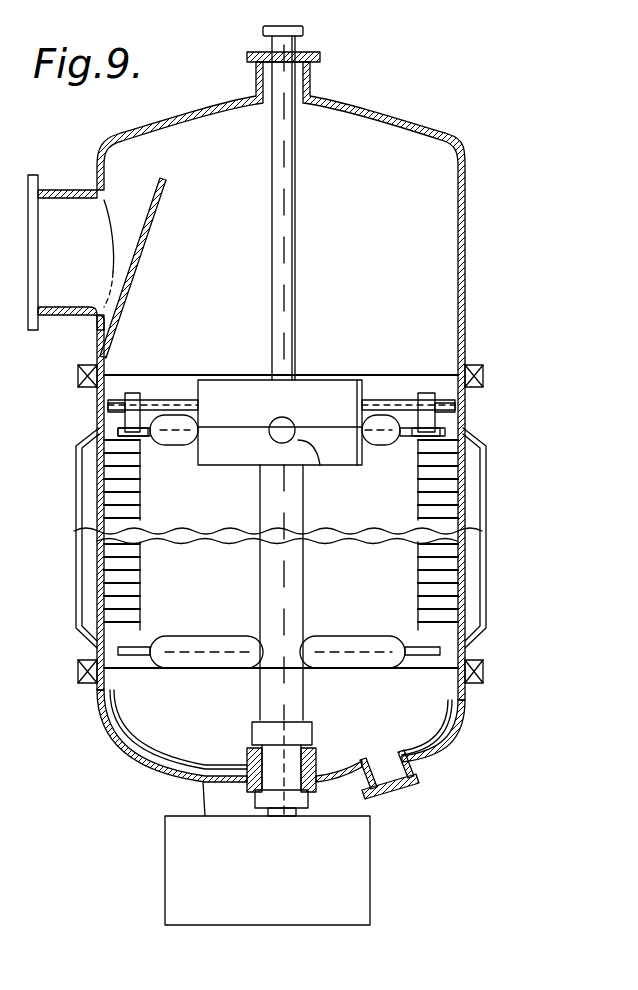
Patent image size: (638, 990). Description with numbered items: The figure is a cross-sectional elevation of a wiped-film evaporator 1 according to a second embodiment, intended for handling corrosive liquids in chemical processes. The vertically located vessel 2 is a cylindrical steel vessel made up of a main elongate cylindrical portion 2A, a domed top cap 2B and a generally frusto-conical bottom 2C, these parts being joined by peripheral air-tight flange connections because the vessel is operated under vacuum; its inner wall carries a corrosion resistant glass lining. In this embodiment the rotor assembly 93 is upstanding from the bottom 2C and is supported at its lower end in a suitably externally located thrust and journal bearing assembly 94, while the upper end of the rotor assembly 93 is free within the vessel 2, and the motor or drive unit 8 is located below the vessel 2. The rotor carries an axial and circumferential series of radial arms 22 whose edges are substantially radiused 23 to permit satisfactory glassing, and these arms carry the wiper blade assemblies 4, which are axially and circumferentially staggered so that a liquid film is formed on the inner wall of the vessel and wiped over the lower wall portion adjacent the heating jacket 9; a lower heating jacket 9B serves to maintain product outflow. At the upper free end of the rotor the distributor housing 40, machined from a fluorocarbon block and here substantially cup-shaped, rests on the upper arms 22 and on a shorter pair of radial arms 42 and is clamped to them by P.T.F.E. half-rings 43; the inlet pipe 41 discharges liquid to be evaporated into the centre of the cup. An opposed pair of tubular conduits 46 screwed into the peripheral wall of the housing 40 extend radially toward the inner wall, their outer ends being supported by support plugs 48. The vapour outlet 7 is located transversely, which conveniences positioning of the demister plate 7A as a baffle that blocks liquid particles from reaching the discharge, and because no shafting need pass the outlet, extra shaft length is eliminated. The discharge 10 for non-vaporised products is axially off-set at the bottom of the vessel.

The wiped-film evaporator 1 is at (288, 404).
The vessel 2 is at (95, 408).
The main elongate cylindrical portion 2A is at (467, 413).
The domed top cap 2B is at (466, 199).
The frusto-conical bottom 2C is at (468, 702).
The wiper blade assemblies 4 is at (143, 578).
The outlet for vapour 7 is at (56, 213).
The demister plate 7A is at (148, 242).
The drive unit 8 is at (352, 862).
The heating jacket 9 is at (486, 496).
The lower heating jacket 9B is at (126, 753).
The discharge for non-vaporised products 10 is at (383, 771).
The radial arms 22 is at (377, 423).
The radiused edges 23 is at (158, 668).
The housing 40 is at (280, 407).
The inlet pipe 41 is at (291, 244).
The shorter pair of radial arms 42 is at (303, 443).
The half-rings 43 is at (243, 450).
The tubular conduits 46 is at (172, 402).
The support plugs 48 is at (133, 394).
The rotor assembly 93 is at (257, 606).
The thrust and journal bearing assembly 94 is at (234, 782).